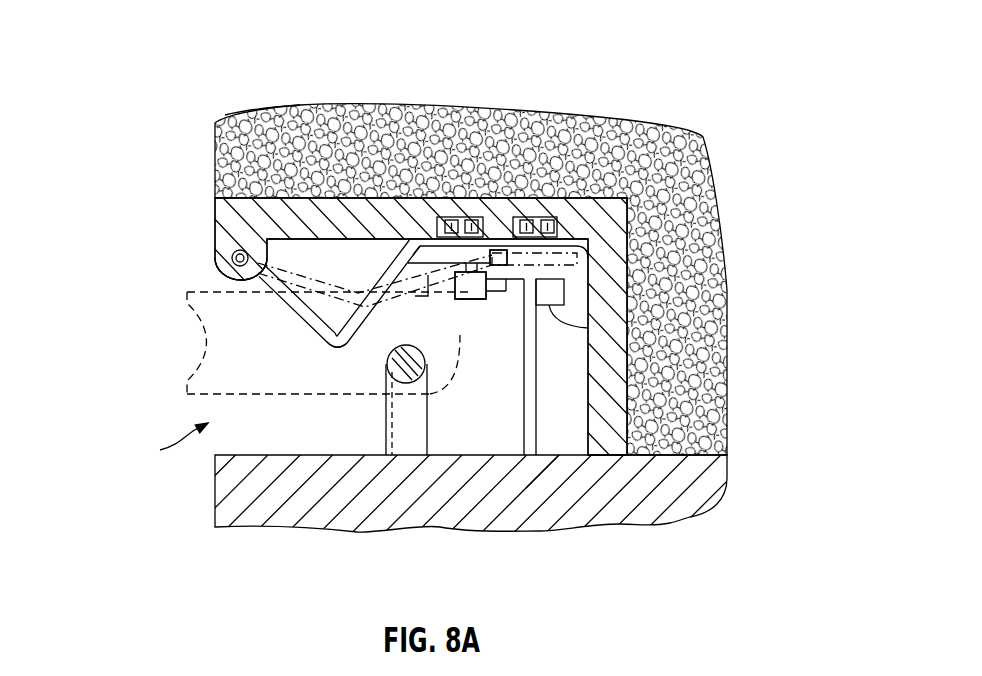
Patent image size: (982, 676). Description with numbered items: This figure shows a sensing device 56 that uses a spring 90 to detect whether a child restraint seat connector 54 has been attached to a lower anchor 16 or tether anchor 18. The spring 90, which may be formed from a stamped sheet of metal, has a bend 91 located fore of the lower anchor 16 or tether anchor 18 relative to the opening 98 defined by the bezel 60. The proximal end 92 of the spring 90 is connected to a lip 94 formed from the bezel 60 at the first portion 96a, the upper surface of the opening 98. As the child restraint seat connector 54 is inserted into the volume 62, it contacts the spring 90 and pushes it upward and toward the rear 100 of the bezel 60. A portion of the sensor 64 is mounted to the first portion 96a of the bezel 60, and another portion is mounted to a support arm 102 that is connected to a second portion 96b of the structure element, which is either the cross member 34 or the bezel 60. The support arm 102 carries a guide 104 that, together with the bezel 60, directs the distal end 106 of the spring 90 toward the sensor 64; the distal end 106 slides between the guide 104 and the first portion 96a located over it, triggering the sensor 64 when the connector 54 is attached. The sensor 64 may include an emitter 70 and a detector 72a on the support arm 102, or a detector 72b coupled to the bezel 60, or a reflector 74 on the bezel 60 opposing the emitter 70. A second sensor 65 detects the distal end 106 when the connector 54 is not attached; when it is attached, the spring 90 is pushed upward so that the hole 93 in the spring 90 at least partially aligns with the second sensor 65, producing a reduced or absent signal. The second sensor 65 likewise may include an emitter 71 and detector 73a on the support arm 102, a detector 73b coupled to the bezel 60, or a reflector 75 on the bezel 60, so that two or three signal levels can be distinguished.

The sensing device 56 is at (123, 56).
The child restraint seat connector 54 is at (278, 364).
The lower anchor 16 is at (372, 472).
The tether anchor 18 is at (410, 445).
The cross member 34 is at (637, 455).
The bezel 60 is at (630, 364).
The volume 62 is at (487, 522).
The sensor 64 is at (677, 129).
The second sensor 65 is at (433, 257).
The emitter 70 is at (667, 210).
The detector 72a is at (557, 233).
The emitter 71 is at (483, 367).
The detector 73a is at (462, 300).
The detector 72b is at (655, 189).
The reflector 74 is at (490, 258).
The detector 73b is at (456, 272).
The reflector 75 is at (452, 217).
The spring 90 is at (364, 292).
The bend 91 is at (337, 349).
The proximal end 92 is at (262, 279).
The hole 93 is at (500, 291).
The lip 94 is at (223, 230).
The first portion 96a is at (282, 149).
The second portion 96b is at (563, 478).
The opening 98 is at (166, 447).
The rear 100 is at (557, 430).
The support arm 102 is at (530, 450).
The guide 104 is at (520, 279).
The distal end 106 is at (491, 250).